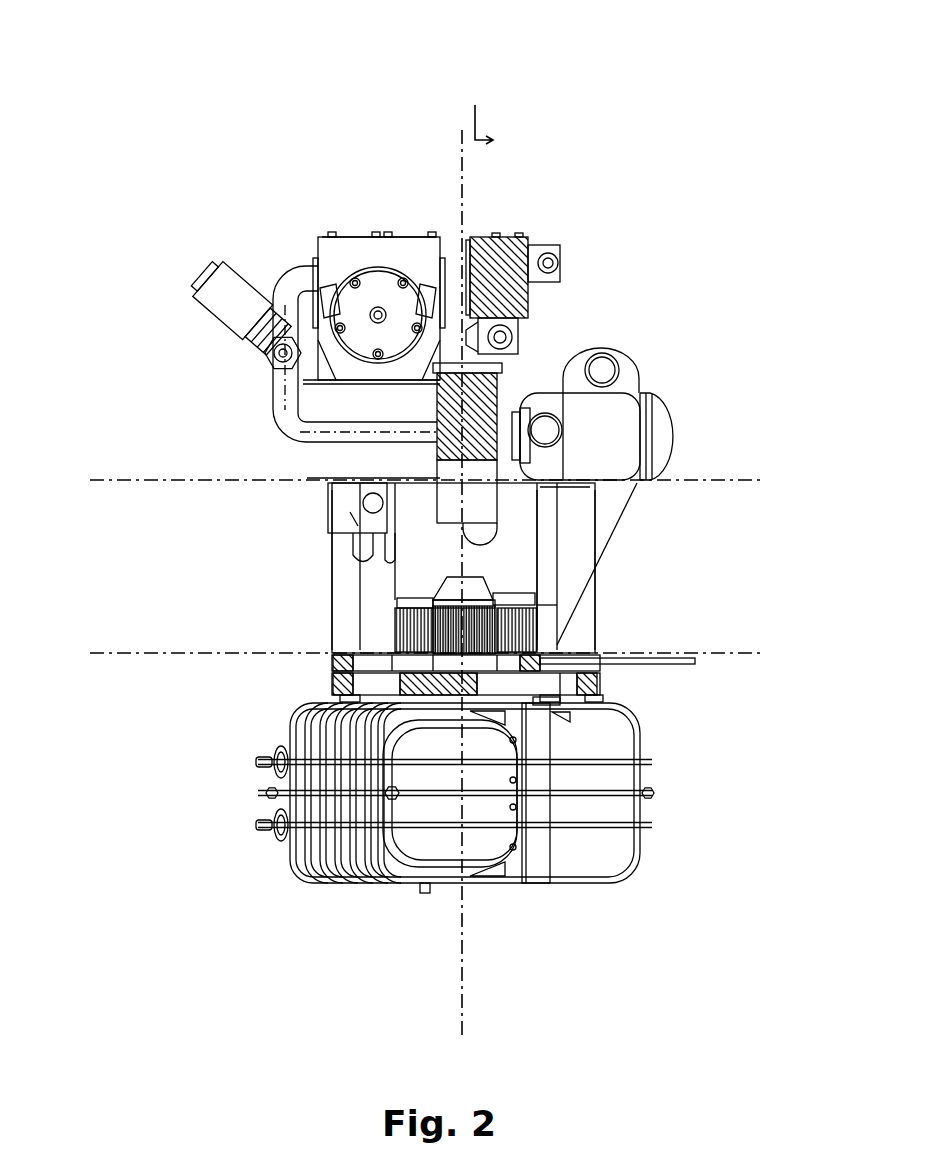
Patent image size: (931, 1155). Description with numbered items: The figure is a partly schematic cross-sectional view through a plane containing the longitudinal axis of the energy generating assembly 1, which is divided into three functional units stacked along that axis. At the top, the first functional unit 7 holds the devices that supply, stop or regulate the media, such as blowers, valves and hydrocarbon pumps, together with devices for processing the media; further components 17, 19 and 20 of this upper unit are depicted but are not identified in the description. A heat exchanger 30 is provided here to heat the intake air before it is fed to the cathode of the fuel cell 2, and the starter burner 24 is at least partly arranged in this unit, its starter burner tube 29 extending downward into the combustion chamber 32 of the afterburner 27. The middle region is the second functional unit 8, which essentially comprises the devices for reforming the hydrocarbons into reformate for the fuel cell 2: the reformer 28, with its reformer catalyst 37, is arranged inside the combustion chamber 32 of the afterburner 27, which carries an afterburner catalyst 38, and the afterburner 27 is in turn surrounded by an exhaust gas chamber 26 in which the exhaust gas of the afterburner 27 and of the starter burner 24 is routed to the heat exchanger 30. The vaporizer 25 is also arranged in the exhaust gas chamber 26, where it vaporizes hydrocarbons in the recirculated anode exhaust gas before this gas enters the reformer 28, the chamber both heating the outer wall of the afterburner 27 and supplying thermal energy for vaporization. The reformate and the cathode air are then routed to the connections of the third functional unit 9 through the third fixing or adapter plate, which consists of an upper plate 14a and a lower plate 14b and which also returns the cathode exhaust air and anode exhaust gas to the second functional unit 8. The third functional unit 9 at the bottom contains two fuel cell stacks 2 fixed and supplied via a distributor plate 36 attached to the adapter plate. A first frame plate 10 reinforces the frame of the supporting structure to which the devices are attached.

The energy generating assembly 1 is at (115, 93).
The fuel cell 2 is at (392, 848).
The first functional unit 7 is at (709, 253).
The second functional unit 8 is at (740, 585).
The third functional unit 9 is at (726, 828).
The first frame plate 10 is at (557, 488).
The upper plate 14a is at (325, 662).
The lower plate 14b is at (333, 683).
The control unit 17 is at (328, 240).
The connector block 19 is at (527, 297).
The sensor 20 is at (228, 308).
The starter burner 24 is at (498, 410).
The vaporizer 25 is at (350, 517).
The exhaust gas chamber 26 is at (577, 627).
The afterburner 27 is at (537, 543).
The reformer 28 is at (533, 612).
The starter burner tube 29 is at (437, 507).
The heat exchanger 30 is at (627, 410).
The combustion chamber 32 is at (515, 565).
The distributor plate 36 is at (530, 813).
The reformer catalyst 37 is at (447, 620).
The afterburner catalyst 38 is at (427, 628).